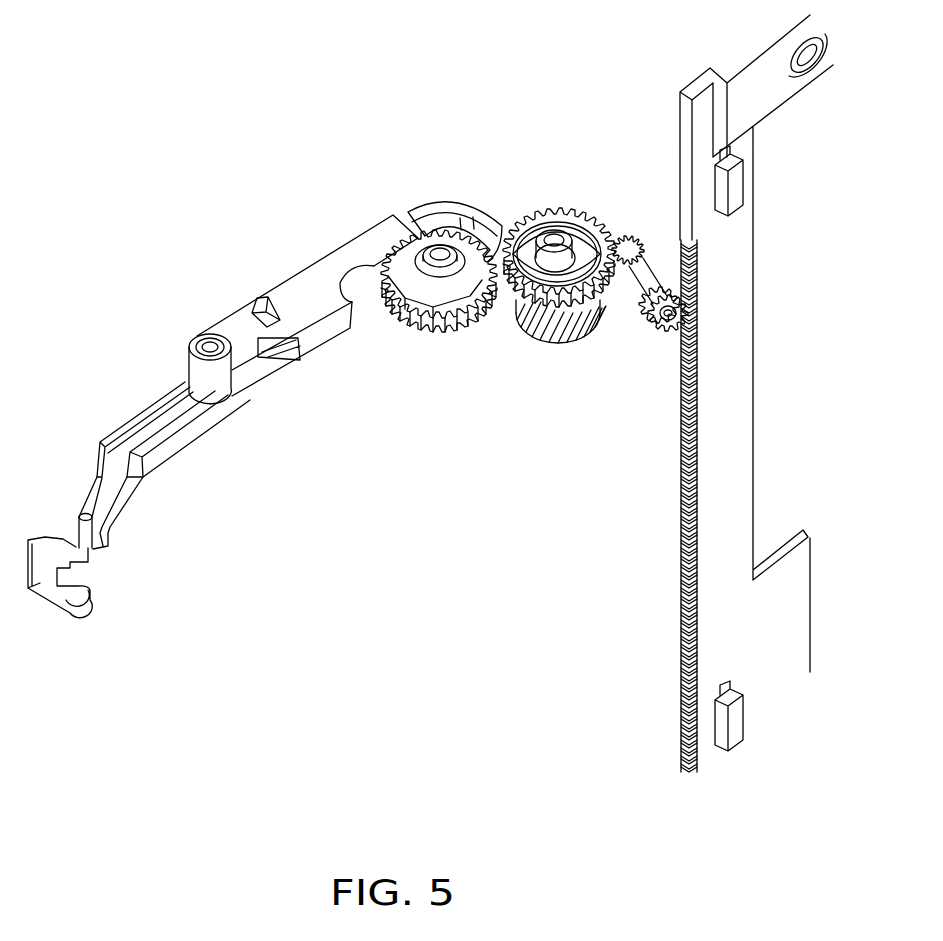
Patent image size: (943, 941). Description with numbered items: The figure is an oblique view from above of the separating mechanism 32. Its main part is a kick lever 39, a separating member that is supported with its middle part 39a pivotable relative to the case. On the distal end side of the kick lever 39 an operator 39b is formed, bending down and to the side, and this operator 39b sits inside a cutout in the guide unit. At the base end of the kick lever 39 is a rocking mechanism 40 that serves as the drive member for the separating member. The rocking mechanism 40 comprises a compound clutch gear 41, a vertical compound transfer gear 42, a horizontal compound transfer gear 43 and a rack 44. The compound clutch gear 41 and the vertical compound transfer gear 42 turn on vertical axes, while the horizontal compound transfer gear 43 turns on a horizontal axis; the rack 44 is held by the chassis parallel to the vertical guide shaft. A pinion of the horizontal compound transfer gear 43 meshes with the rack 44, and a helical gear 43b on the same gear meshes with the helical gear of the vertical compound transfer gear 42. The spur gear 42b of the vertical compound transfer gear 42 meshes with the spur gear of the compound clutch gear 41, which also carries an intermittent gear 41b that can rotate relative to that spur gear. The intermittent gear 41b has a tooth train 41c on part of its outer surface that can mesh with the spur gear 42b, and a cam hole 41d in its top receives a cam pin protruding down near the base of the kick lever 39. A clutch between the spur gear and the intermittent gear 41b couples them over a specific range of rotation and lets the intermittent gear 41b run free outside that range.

The separating mechanism 32 is at (160, 138).
The rocking mechanism 40 is at (568, 105).
The kick lever 39 is at (292, 272).
The middle part 39a is at (208, 345).
The operator 39b is at (90, 602).
The compound clutch gear 41 is at (390, 322).
The intermittent gear 41b is at (402, 275).
The tooth train 41c is at (462, 318).
The cam hole 41d is at (448, 222).
The vertical compound transfer gear 42 is at (540, 345).
The spur gear 42b is at (540, 212).
The horizontal compound transfer gear 43 is at (645, 333).
The helical gear 43b is at (632, 245).
The rack 44 is at (680, 663).